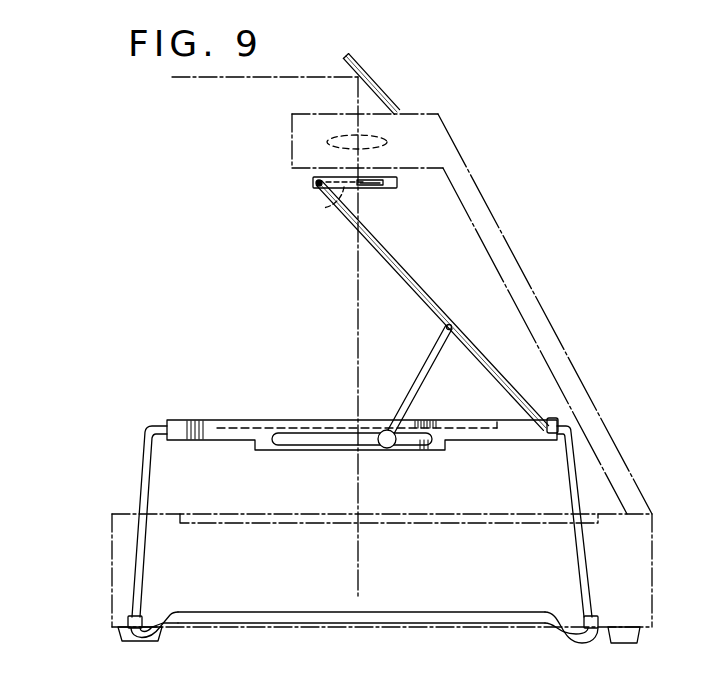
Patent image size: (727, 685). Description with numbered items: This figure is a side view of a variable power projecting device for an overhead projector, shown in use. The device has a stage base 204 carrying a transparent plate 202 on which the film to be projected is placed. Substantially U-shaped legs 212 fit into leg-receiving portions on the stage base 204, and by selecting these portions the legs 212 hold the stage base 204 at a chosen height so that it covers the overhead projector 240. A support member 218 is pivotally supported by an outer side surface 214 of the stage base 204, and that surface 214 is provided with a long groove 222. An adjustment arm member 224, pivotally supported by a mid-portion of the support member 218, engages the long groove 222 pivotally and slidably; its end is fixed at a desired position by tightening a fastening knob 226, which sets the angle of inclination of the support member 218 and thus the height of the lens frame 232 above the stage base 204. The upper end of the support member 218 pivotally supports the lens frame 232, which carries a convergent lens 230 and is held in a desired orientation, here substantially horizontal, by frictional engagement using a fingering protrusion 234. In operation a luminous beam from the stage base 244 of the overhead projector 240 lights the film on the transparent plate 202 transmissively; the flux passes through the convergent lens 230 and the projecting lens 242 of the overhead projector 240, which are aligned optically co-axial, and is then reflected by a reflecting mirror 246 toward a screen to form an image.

The transparent plate 202 is at (275, 420).
The stage base 204 is at (195, 417).
The legs 212 is at (147, 455).
The outer side surface 214 is at (478, 432).
The support member 218 is at (372, 247).
The long groove 222 is at (333, 437).
The adjustment arm member 224 is at (413, 383).
The fastening knob 226 is at (383, 449).
The convergent lens 230 is at (318, 187).
The lens frame 232 is at (397, 181).
The fingering protrusion 234 is at (378, 189).
The overhead projector 240 is at (127, 514).
The projecting lens 242 is at (376, 130).
The stage base of the overhead projector 244 is at (285, 513).
The reflecting mirror 246 is at (360, 67).